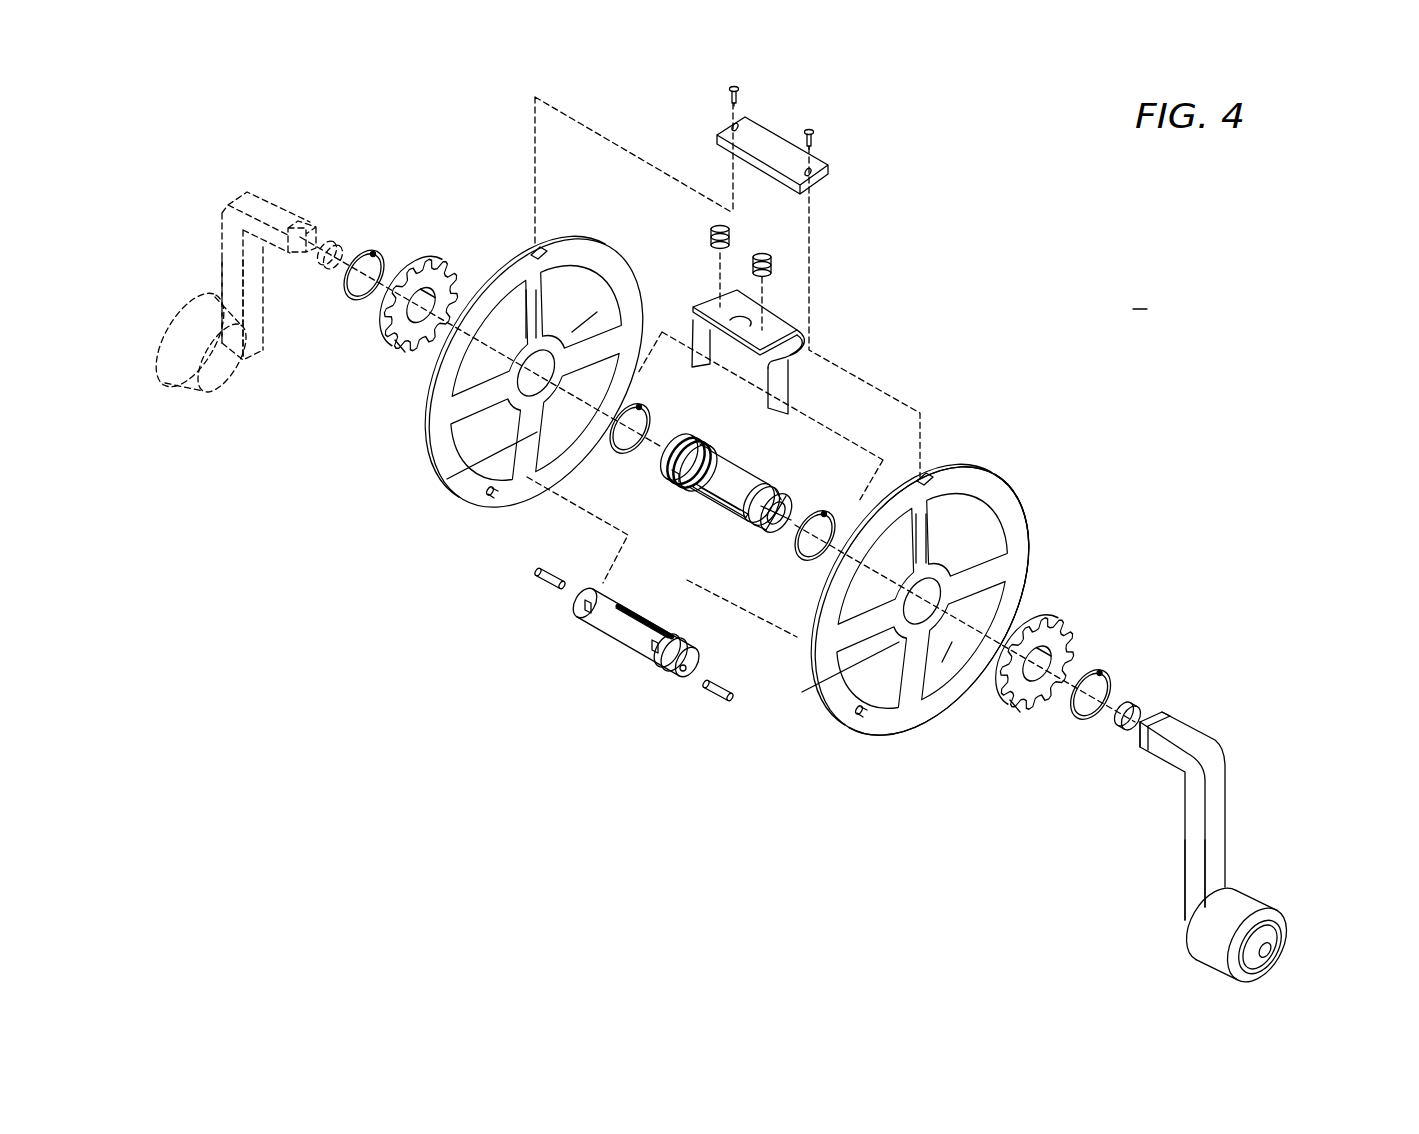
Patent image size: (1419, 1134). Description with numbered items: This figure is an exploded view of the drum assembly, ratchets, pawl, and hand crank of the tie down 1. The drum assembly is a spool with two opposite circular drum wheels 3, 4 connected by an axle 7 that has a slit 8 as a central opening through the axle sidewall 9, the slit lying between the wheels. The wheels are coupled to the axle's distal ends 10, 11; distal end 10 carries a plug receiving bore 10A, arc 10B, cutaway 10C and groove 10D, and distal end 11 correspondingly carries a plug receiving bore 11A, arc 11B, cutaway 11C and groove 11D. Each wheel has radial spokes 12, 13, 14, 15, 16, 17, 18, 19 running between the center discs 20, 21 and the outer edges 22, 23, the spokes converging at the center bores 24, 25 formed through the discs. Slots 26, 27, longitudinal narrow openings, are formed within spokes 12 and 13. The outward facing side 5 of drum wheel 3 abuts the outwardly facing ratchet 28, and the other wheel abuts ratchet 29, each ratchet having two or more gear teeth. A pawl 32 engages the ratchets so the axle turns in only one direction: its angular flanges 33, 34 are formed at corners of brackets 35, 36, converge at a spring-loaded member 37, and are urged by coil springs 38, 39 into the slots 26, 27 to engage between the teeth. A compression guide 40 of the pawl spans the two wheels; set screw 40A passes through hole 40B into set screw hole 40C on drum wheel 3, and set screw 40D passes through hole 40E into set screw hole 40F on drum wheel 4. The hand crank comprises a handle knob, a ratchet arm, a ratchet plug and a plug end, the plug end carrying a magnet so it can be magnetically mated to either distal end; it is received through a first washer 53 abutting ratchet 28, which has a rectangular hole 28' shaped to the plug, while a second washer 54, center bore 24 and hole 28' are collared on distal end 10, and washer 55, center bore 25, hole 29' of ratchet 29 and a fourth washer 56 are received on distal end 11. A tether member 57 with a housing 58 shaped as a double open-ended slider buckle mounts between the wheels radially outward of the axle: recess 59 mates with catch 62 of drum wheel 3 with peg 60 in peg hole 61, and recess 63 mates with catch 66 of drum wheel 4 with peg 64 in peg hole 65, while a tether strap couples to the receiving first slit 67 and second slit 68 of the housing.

The tie down 1 is at (1140, 298).
The drum wheel 3 is at (930, 586).
The drum wheel 4 is at (534, 375).
The outward facing side 5 is at (1022, 549).
The axle 7 is at (720, 493).
The slit 8 is at (690, 497).
The axle sidewall 9 is at (714, 505).
The distal end 10 is at (781, 516).
The plug receiving bore 10A is at (783, 537).
The arc 10B is at (803, 500).
The cutaway 10C is at (758, 520).
The groove 10D is at (773, 489).
The distal end 11 is at (659, 454).
The plug receiving bore 11A is at (662, 453).
The arc 11B is at (664, 473).
The cutaway 11C is at (670, 478).
The groove 11D is at (690, 433).
The radial spoke 12 is at (942, 524).
The radial spoke 13 is at (552, 290).
The radial spoke 14 is at (864, 614).
The radial spoke 15 is at (480, 343).
The radial spoke 16 is at (940, 655).
The radial spoke 17 is at (557, 442).
The radial spoke 18 is at (960, 626).
The radial spoke 19 is at (594, 325).
The center disc 20 is at (920, 605).
The center disc 21 is at (550, 379).
The outer edge 22 is at (934, 700).
The outer edge 23 is at (492, 278).
The center bore 24 is at (842, 657).
The center bore 25 is at (463, 467).
The slot 26 is at (964, 478).
The slot 27 is at (527, 300).
The ratchet 28 is at (1052, 663).
The rectangular hole 28' is at (1035, 737).
The ratchet 29 is at (408, 313).
The hole 29' is at (403, 378).
The pawl 32 is at (900, 150).
The angular flange 33 is at (790, 378).
The angular flange 34 is at (700, 327).
The bracket 35 is at (800, 333).
The bracket 36 is at (759, 329).
The spring-loaded member 37 is at (743, 325).
The coil spring 38 is at (770, 258).
The coil spring 39 is at (731, 235).
The compression guide 40 is at (769, 130).
The set screw 40A is at (815, 136).
The through hole 40B is at (813, 172).
The set screw hole 40C is at (926, 475).
The set screw 40D is at (730, 89).
The through hole 40E is at (732, 127).
The set screw hole 40F is at (541, 247).
The first washer 53 is at (1086, 718).
The second washer 54 is at (813, 562).
The washer 55 is at (641, 412).
The fourth washer 56 is at (373, 253).
The tether member 57 is at (616, 649).
The housing 58 is at (680, 640).
The recess 59 is at (654, 655).
The peg 60 is at (716, 695).
The peg hole 61 is at (688, 668).
The catch 62 is at (869, 717).
The recess 63 is at (587, 622).
The peg 64 is at (533, 575).
The peg hole 65 is at (586, 588).
The catch 66 is at (496, 499).
The tether strap receiving first slit 67 is at (626, 607).
The tether strap receiving second slit 68 is at (652, 623).